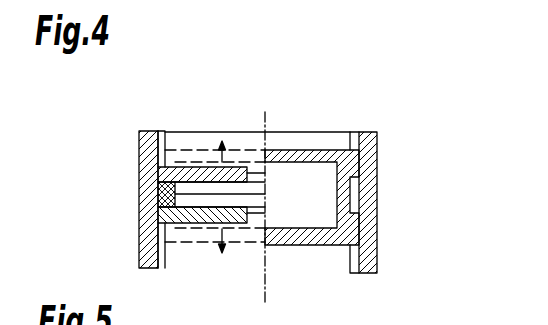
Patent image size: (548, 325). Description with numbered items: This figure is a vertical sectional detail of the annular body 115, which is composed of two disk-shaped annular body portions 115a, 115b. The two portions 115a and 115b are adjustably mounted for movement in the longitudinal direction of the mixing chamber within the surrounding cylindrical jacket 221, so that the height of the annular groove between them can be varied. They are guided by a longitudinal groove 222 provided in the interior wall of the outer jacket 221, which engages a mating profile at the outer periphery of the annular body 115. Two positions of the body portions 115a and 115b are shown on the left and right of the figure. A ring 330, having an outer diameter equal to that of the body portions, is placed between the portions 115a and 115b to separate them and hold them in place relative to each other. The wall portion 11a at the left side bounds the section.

The housing end wall 11a is at (139, 143).
The annular body 115 is at (158, 195).
The annular body portion 115a is at (158, 209).
The annular body portion 115b is at (194, 157).
The cylindrical jacket 221 is at (368, 143).
The longitudinal groove 222 is at (354, 142).
The ring 330 is at (349, 192).